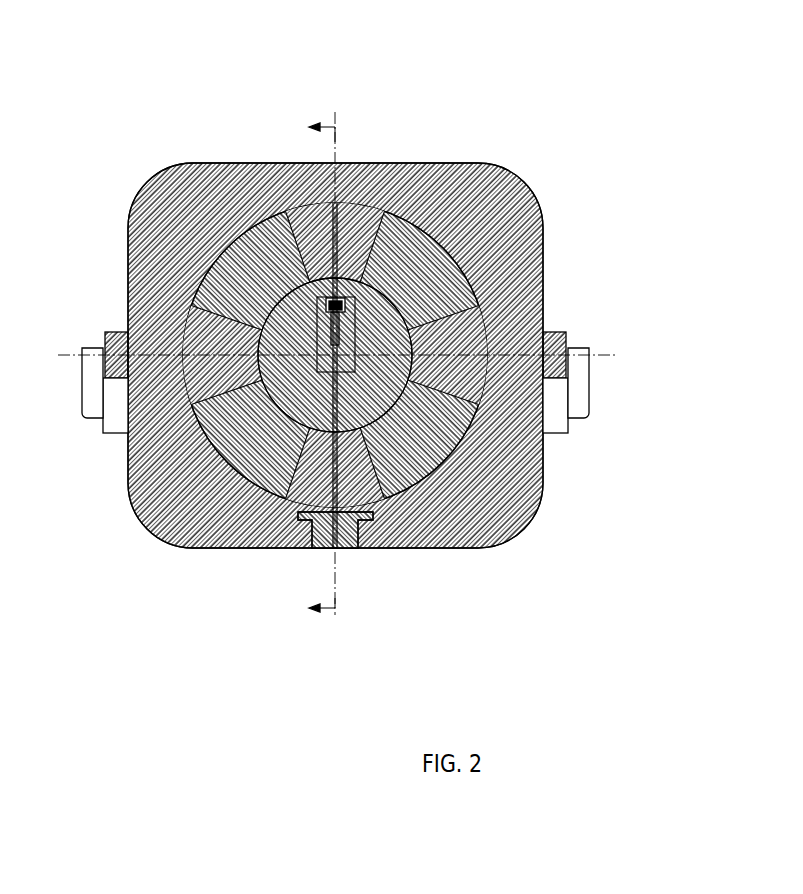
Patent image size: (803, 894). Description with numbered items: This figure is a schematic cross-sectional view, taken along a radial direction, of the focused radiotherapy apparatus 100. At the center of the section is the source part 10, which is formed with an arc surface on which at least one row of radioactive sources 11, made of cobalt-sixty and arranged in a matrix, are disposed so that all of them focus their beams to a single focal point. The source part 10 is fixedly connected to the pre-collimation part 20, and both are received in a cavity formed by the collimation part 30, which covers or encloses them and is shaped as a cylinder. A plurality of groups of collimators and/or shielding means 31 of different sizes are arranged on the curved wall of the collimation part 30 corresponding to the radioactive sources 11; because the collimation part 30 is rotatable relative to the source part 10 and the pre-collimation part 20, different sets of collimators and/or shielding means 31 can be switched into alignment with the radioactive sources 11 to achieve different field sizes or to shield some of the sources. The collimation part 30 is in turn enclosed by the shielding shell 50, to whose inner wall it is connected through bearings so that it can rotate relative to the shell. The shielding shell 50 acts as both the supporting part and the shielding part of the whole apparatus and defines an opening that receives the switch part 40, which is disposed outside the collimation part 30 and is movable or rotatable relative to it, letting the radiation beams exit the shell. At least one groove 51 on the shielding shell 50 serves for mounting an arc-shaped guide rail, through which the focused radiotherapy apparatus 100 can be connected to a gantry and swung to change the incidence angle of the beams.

The focused radiotherapy apparatus 100 is at (356, 44).
The source part 10 is at (200, 285).
The radioactive sources 11 is at (212, 239).
The pre-collimation part 20 is at (228, 482).
The collimation part 30 is at (470, 301).
The collimators and/or shielding means 31 is at (478, 283).
The switch part 40 is at (318, 522).
The shielding shell 50 is at (540, 215).
The groove 51 is at (577, 341).